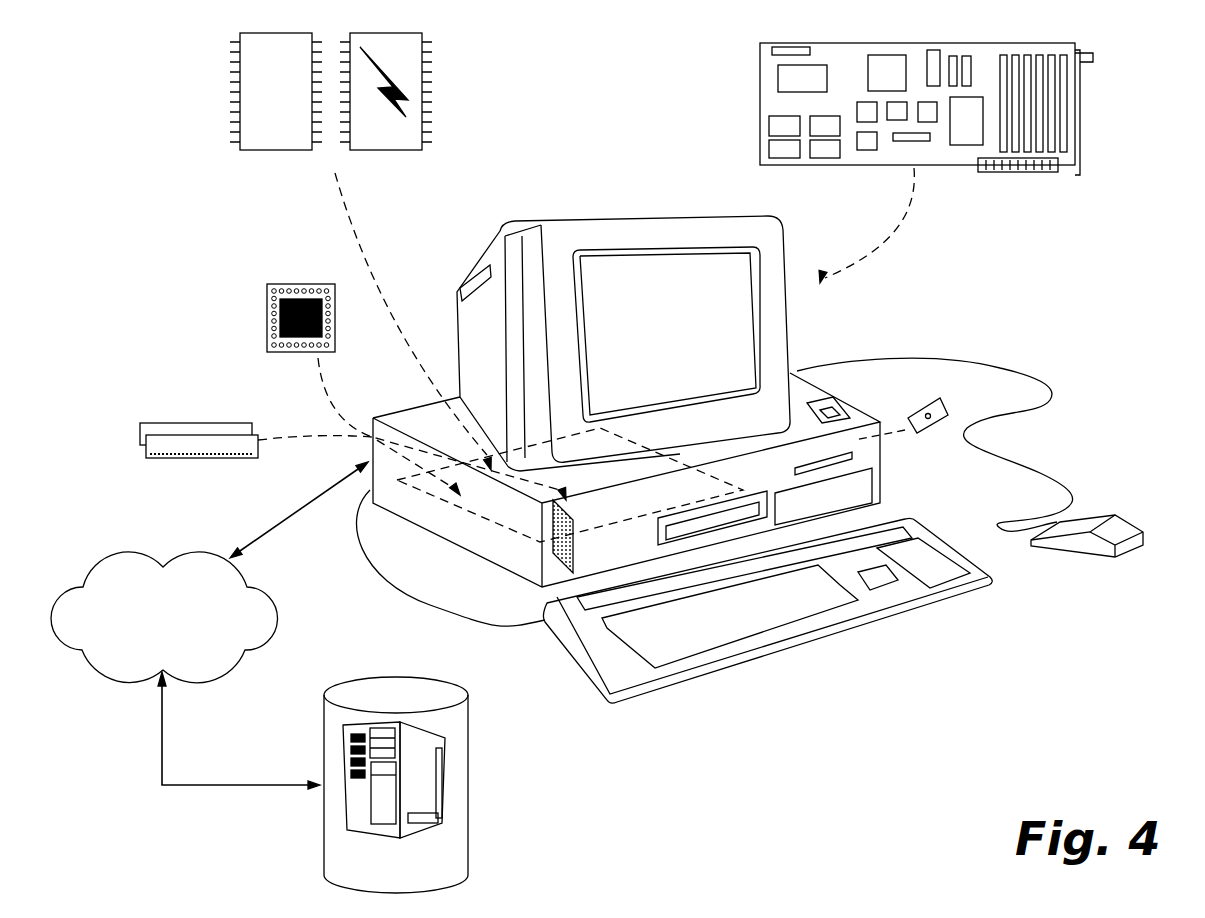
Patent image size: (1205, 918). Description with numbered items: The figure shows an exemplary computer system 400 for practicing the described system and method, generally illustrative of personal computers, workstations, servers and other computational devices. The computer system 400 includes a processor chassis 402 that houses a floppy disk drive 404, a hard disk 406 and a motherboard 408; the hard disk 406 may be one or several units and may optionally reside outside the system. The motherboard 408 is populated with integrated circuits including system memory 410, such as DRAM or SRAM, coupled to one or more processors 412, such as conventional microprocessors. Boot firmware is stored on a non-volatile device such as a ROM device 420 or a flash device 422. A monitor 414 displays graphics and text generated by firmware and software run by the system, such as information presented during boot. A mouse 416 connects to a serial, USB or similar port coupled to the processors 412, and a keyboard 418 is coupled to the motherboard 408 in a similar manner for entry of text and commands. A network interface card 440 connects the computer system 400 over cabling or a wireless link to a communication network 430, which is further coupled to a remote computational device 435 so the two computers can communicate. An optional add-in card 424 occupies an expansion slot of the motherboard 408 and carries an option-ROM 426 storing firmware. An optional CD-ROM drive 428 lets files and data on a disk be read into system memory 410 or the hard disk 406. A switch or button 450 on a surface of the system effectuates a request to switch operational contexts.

The computer system 400 is at (750, 764).
The processor chassis 402 is at (906, 430).
The floppy disk drive 404 is at (850, 450).
The hard disk 406 is at (848, 488).
The motherboard 408 is at (480, 513).
The system memory 410 is at (172, 430).
The processor 412 is at (335, 337).
The monitor 414 is at (786, 288).
The mouse 416 is at (1117, 557).
The keyboard 418 is at (870, 625).
The ROM device 420 is at (277, 140).
The flash device 422 is at (389, 142).
The add-in card 424 is at (922, 109).
The option-ROM 426 is at (781, 80).
The CD-ROM drive 428 is at (660, 541).
The communication network 430 is at (203, 667).
The remote computational device 435 is at (469, 745).
The network interface card 440 is at (553, 570).
The switch or button 450 is at (830, 408).